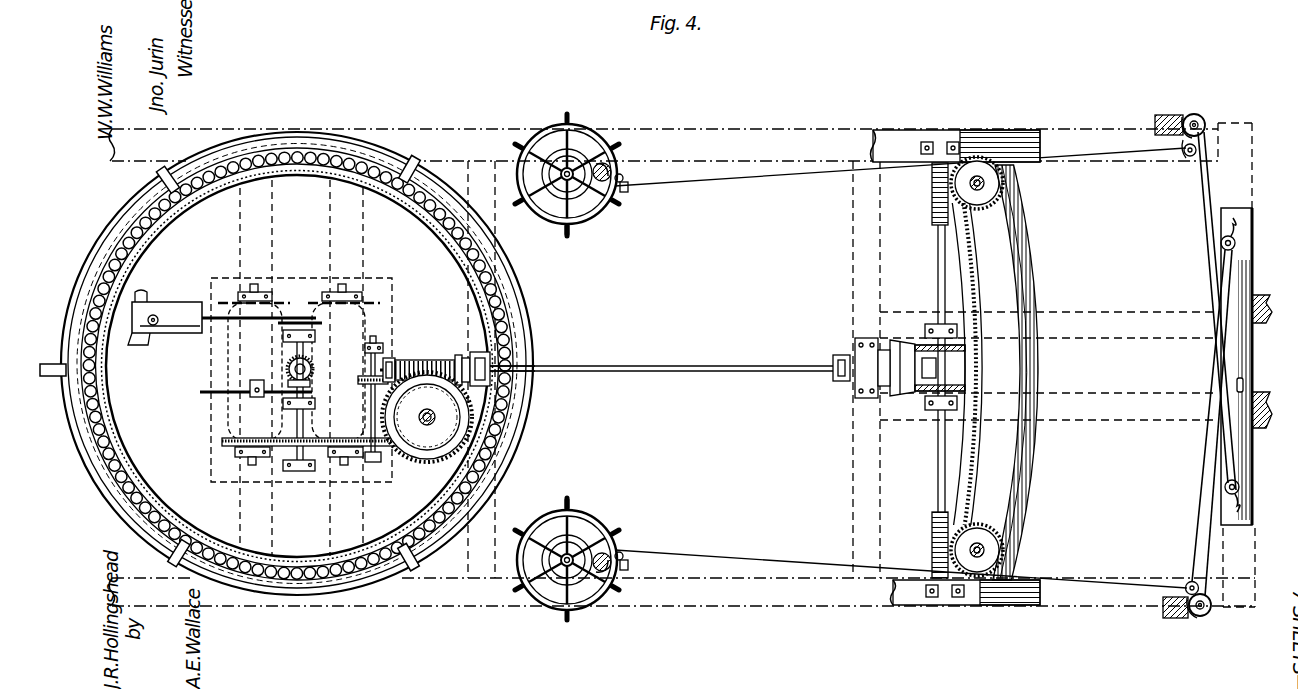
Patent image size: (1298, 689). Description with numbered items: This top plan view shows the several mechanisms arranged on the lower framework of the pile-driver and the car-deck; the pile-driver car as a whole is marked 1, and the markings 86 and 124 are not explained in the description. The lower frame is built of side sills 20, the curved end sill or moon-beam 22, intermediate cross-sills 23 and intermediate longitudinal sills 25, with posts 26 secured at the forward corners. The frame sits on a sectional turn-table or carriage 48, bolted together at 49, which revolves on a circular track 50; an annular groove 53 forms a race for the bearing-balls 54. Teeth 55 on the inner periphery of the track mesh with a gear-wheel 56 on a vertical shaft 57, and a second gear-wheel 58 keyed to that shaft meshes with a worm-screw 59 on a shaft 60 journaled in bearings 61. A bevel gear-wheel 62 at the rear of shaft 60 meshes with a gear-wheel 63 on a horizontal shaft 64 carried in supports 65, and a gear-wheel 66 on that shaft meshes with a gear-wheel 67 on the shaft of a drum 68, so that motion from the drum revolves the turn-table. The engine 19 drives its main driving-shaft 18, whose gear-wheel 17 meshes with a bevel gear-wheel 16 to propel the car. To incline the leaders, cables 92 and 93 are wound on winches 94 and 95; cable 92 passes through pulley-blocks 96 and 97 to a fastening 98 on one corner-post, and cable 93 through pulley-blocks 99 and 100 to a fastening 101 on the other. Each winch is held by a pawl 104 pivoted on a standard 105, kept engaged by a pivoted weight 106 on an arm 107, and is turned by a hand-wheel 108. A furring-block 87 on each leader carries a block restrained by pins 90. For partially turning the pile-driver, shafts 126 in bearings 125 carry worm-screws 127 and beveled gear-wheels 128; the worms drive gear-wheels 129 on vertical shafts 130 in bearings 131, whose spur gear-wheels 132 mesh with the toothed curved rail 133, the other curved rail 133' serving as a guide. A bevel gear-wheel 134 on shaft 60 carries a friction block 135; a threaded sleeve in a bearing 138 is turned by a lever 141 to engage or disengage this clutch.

The vessel 1 is at (664, 610).
The bevel gear-wheel 16 is at (313, 358).
The gear-wheel 17 is at (316, 378).
The main driving-shaft 18 is at (306, 400).
The engine 19 is at (166, 335).
The side sills 20 is at (750, 142).
The end sill (moon-beam) 22 is at (1238, 612).
The intermediate cross-sills 23 is at (520, 494).
The intermediate longitudinal sills 25 is at (1153, 394).
The posts 26 is at (1168, 118).
The turn-table or carriage 48 is at (520, 440).
The bolted joint 49 is at (160, 186).
The circular track 50 is at (524, 348).
The annular groove 53 is at (514, 298).
The bearing-balls 54 is at (522, 316).
The teeth 55 is at (156, 490).
The gear-wheel 56 is at (424, 466).
The vertical shaft 57 is at (430, 425).
The second gear-wheel 58 is at (463, 355).
The worm-screw 59 is at (428, 355).
The shaft 60 is at (576, 372).
The bearings 61 is at (393, 368).
The bevel gear-wheel 62 is at (390, 360).
The gear-wheel 63 is at (360, 382).
The horizontal shaft 64 is at (370, 414).
The supports 65 is at (375, 343).
The gear-wheel 66 is at (421, 414).
The gear-wheel 67 is at (330, 449).
The drum 68 is at (378, 296).
The casing 86 is at (242, 327).
The furring-block 87 is at (1243, 385).
The pins 90 is at (1252, 298).
The cable 92 is at (722, 180).
The cable 93 is at (748, 547).
The winch or windlass 94 is at (583, 152).
The winch or windlass 95 is at (598, 542).
The pulley-block 96 is at (1186, 158).
The pulley-block 97 is at (1240, 487).
The cable fastening 98 is at (1198, 116).
The pulley-block 99 is at (1188, 582).
The pulley-block 100 is at (1236, 243).
The cable fastening 101 is at (1198, 618).
The pawl 104 is at (612, 165).
The standard 105 is at (612, 172).
The pivoted weight 106 is at (624, 179).
The arm 107 is at (626, 190).
The hand-wheels 108 is at (576, 222).
The guide lines 124 is at (264, 250).
The bearings 125 is at (945, 150).
The shafts 126 is at (938, 262).
The worm-screw 127 is at (932, 196).
The beveled gear-wheel 128 is at (930, 367).
The gear-wheels 129 is at (1001, 183).
The vertical shafts 130 is at (985, 190).
The bearings 131 is at (1010, 142).
The spur gear-wheel 132 is at (972, 252).
The curved rail 133 is at (996, 364).
The curved guide-rail 133' is at (1037, 372).
The bevel gear-wheel 134 is at (940, 410).
The friction block or head 135 is at (925, 331).
The internally-screw-threaded bearing 138 is at (862, 396).
The lever 141 is at (842, 382).